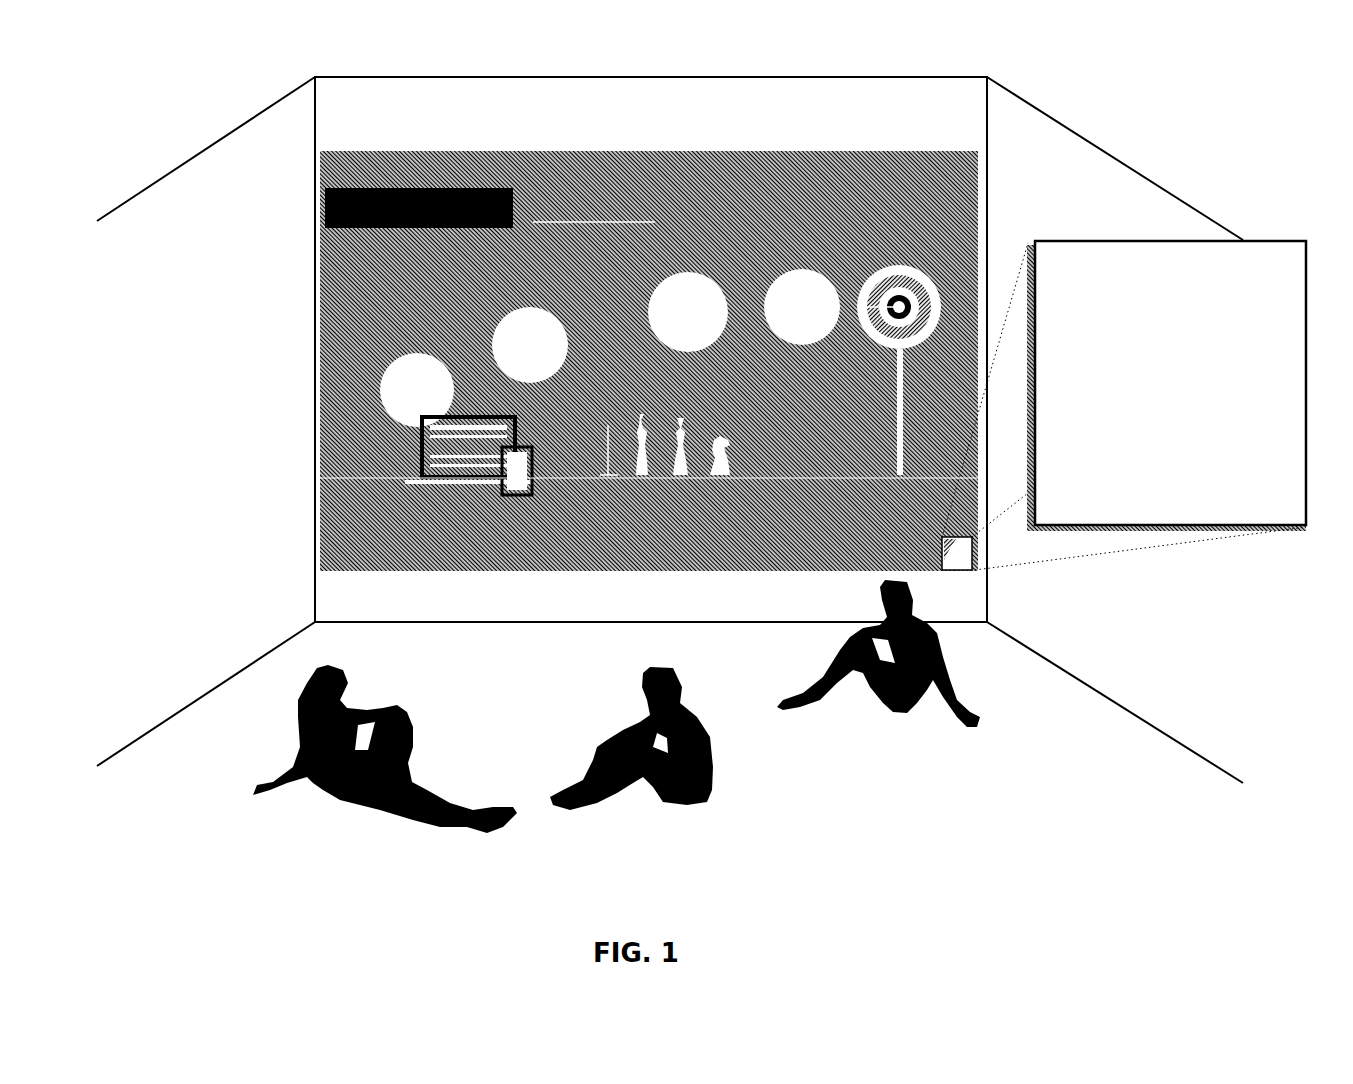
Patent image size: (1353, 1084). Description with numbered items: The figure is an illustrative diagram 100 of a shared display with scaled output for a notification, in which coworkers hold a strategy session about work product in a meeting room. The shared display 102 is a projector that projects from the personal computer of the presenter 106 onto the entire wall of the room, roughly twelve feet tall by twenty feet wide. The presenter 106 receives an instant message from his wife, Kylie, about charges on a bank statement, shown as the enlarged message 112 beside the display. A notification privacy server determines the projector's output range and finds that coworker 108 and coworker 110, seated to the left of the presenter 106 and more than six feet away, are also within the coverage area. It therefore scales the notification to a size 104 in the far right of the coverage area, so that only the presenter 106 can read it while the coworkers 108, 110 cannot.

The illustrative diagram 100 is at (1228, 59).
The shared display 102 is at (868, 140).
The scaled size of electronic notification 104 is at (944, 589).
The presenter 106 is at (893, 766).
The coworker 108 is at (661, 846).
The coworker 110 is at (328, 842).
The notification content / message 112 is at (1148, 572).